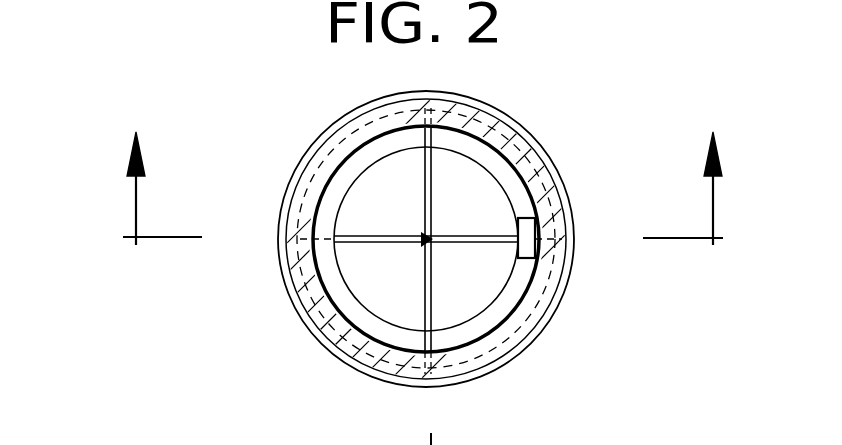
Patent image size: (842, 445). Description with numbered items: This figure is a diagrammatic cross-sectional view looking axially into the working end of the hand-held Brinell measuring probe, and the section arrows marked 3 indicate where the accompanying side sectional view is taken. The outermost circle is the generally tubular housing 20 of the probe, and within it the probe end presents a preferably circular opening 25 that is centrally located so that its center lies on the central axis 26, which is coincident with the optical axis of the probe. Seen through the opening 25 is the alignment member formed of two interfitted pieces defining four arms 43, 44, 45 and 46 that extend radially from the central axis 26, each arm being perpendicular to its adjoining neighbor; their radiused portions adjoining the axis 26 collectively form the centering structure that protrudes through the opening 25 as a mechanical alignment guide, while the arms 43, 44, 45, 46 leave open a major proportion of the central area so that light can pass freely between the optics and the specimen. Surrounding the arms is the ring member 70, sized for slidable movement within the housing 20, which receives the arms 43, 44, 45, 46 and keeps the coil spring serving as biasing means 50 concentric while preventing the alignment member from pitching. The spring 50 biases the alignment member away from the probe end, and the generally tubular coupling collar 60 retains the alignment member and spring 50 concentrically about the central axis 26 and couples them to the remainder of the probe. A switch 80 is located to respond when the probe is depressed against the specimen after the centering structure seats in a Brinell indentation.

The section line for FIG. 3 is at (427, 188).
The tubular housing 20 is at (492, 137).
The opening 25 is at (380, 295).
The central axis 26 is at (422, 234).
The arm 43 is at (350, 236).
The arm 44 is at (480, 242).
The arm 45 is at (424, 197).
The arm 46 is at (423, 282).
The biasing spring 50 is at (348, 122).
The coupling collar 60 is at (555, 187).
The ring member 70 is at (476, 157).
The switch 80 is at (517, 259).